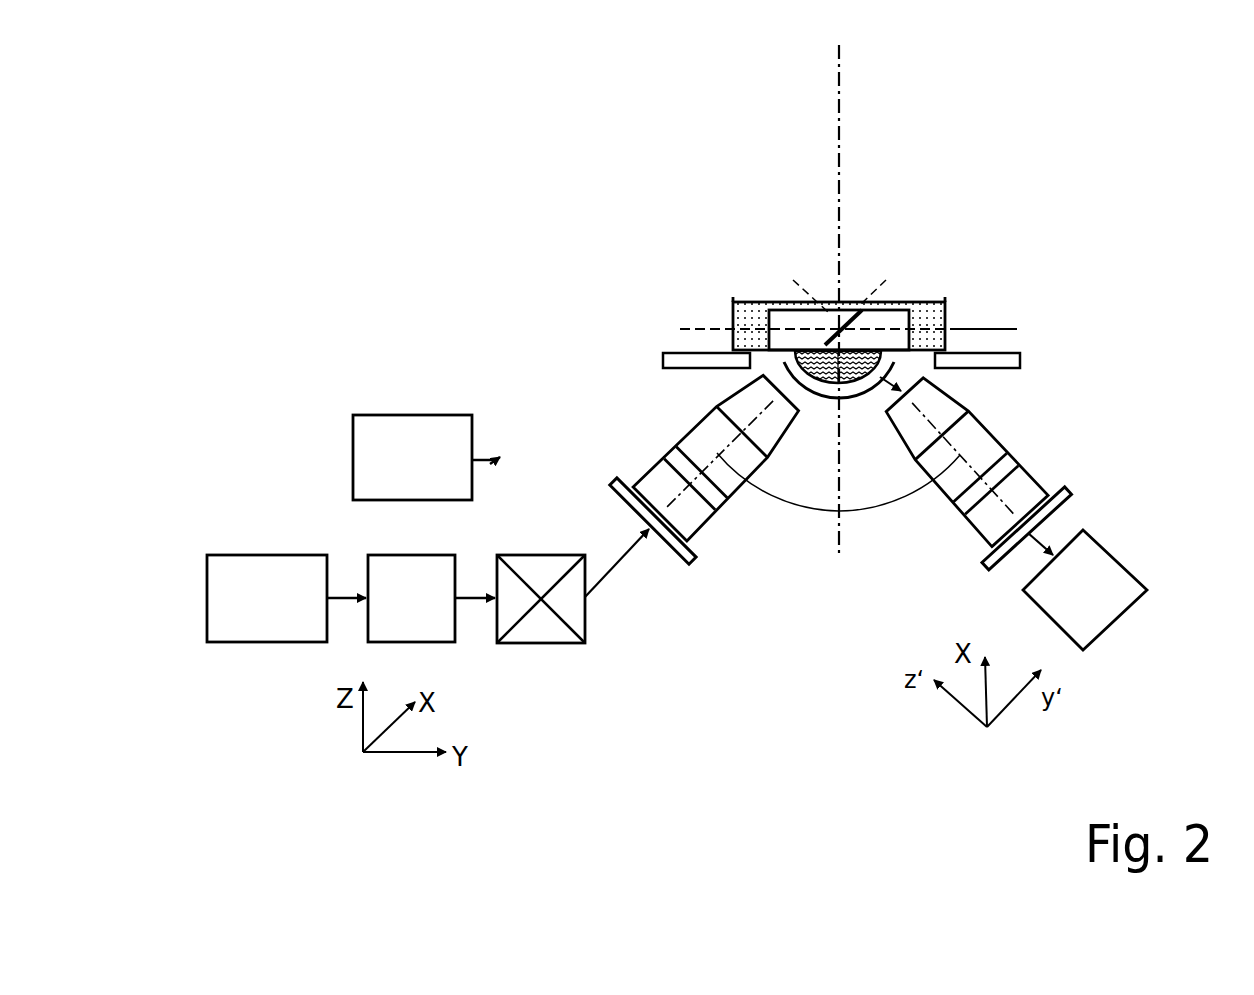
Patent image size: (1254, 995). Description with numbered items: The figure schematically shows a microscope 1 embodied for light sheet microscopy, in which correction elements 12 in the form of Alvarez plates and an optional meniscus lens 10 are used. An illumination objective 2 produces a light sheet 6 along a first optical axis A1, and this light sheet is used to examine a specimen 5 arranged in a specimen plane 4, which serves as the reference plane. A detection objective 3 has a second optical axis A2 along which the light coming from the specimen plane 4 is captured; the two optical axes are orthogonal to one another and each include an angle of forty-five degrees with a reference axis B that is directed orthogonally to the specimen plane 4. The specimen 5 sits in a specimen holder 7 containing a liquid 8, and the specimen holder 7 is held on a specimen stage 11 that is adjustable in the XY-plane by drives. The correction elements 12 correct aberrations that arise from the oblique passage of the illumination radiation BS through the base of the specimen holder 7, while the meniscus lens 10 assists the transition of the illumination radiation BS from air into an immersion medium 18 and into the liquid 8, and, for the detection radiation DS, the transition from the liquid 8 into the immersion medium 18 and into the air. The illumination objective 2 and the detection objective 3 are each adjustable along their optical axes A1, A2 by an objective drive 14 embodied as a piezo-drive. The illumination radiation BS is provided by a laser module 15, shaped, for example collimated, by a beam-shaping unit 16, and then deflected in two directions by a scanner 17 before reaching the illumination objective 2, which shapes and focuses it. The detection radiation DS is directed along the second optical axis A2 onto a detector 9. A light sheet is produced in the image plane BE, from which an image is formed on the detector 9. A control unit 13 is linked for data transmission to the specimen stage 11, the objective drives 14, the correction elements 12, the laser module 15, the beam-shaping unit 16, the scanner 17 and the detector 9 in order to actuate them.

The microscope 1 is at (709, 94).
The illumination objective 2 is at (707, 428).
The detection objective 3 is at (1040, 487).
The specimen plane 4 is at (974, 328).
The specimen 5 is at (888, 322).
The light sheet 6 is at (827, 303).
The specimen holder 7 is at (730, 325).
The liquid 8 is at (737, 303).
The detector 9 is at (1096, 608).
The meniscus lens 10 is at (788, 363).
The specimen stage 11 is at (660, 357).
The correction elements 12 is at (672, 457).
The control unit 13 is at (431, 478).
The objective drive 14 is at (615, 484).
The laser module 15 is at (286, 616).
The beam-shaping unit 16 is at (430, 616).
The scanner 17 is at (540, 645).
The immersion medium 18 is at (848, 366).
The reference axis B is at (840, 57).
The image plane BE is at (852, 308).
The illumination radiation BS is at (627, 552).
The detection radiation DS is at (1040, 533).
The first optical axis A1 is at (700, 463).
The second optical axis A2 is at (913, 397).